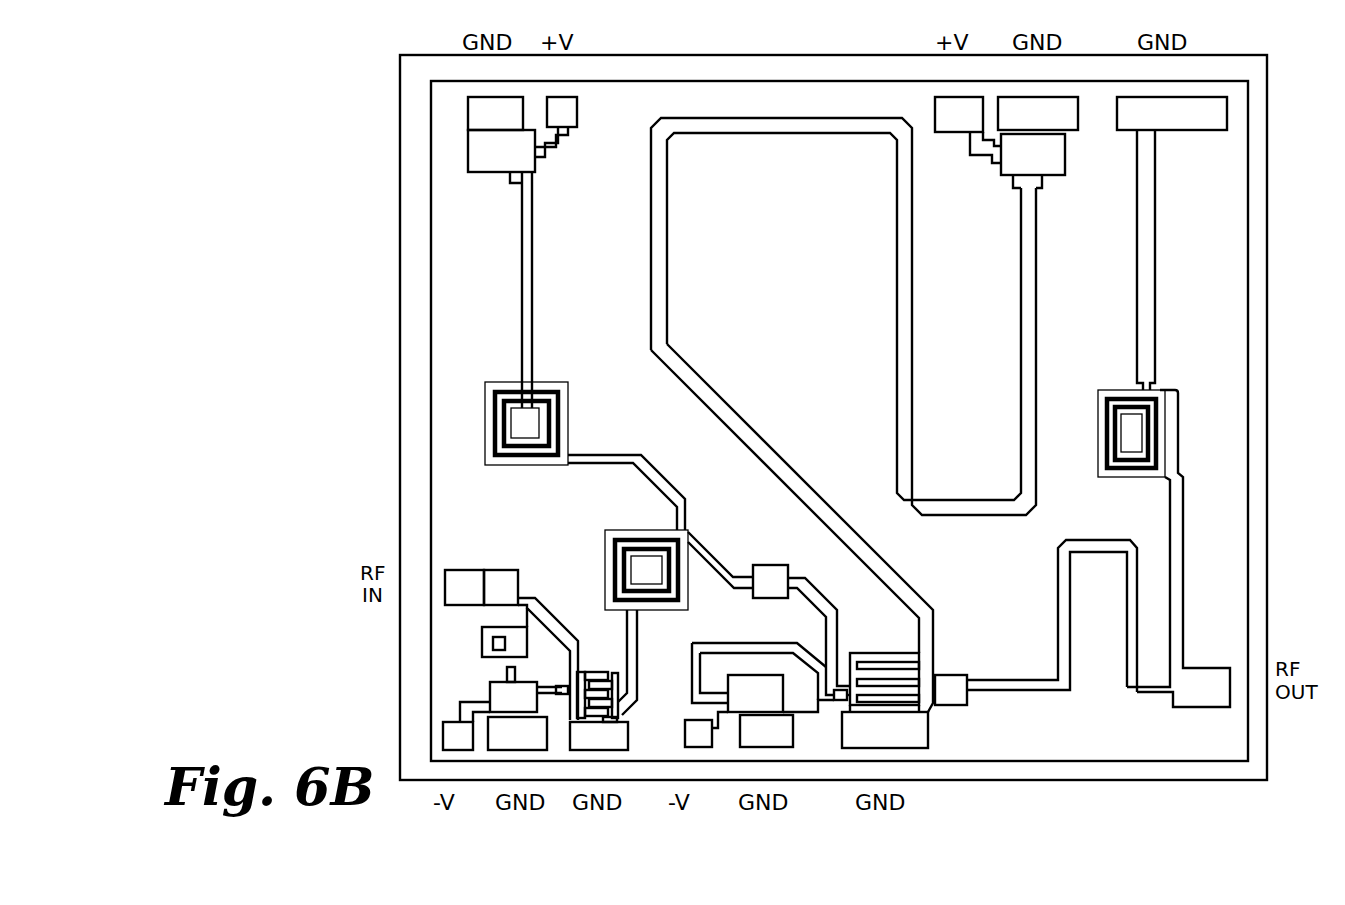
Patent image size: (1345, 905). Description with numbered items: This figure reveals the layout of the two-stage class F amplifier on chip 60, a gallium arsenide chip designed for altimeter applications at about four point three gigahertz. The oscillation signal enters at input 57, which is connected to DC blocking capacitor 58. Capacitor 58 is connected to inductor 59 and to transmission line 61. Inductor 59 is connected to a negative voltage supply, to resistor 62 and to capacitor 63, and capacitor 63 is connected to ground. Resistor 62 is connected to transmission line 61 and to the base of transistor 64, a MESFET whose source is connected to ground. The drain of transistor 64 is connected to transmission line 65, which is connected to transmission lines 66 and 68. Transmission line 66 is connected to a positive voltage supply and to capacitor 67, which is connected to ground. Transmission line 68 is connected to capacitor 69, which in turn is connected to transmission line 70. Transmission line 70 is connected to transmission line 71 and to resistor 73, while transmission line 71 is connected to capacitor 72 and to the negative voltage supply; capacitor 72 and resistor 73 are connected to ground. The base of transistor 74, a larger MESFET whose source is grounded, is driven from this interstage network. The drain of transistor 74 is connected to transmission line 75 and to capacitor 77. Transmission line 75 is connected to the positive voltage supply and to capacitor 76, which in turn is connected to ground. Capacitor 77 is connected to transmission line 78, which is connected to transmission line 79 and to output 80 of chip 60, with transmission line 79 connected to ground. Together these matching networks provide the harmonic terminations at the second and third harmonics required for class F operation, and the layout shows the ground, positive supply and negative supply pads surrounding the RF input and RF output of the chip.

The input 57 is at (462, 570).
The DC blocking capacitor 58 is at (518, 572).
The inductor 59 is at (482, 652).
The chip 60 is at (1268, 72).
The transmission line 61 is at (560, 628).
The resistor 62 is at (563, 697).
The capacitor 63 is at (520, 684).
The transistor 64 is at (595, 672).
The transmission line 65 is at (610, 528).
The transmission line 66 is at (553, 381).
The capacitor 67 is at (480, 175).
The transmission line 68 is at (718, 550).
The capacitor 69 is at (770, 565).
The transmission line 70 is at (840, 618).
The transmission line 71 is at (712, 643).
The capacitor 72 is at (738, 678).
The resistor 73 is at (838, 702).
The transistor 74 is at (875, 655).
The transmission line 75 is at (668, 207).
The capacitor 76 is at (1066, 160).
The capacitor 77 is at (958, 675).
The transmission line 78 is at (1105, 552).
The transmission line 79 is at (1180, 425).
The output 80 is at (1215, 668).